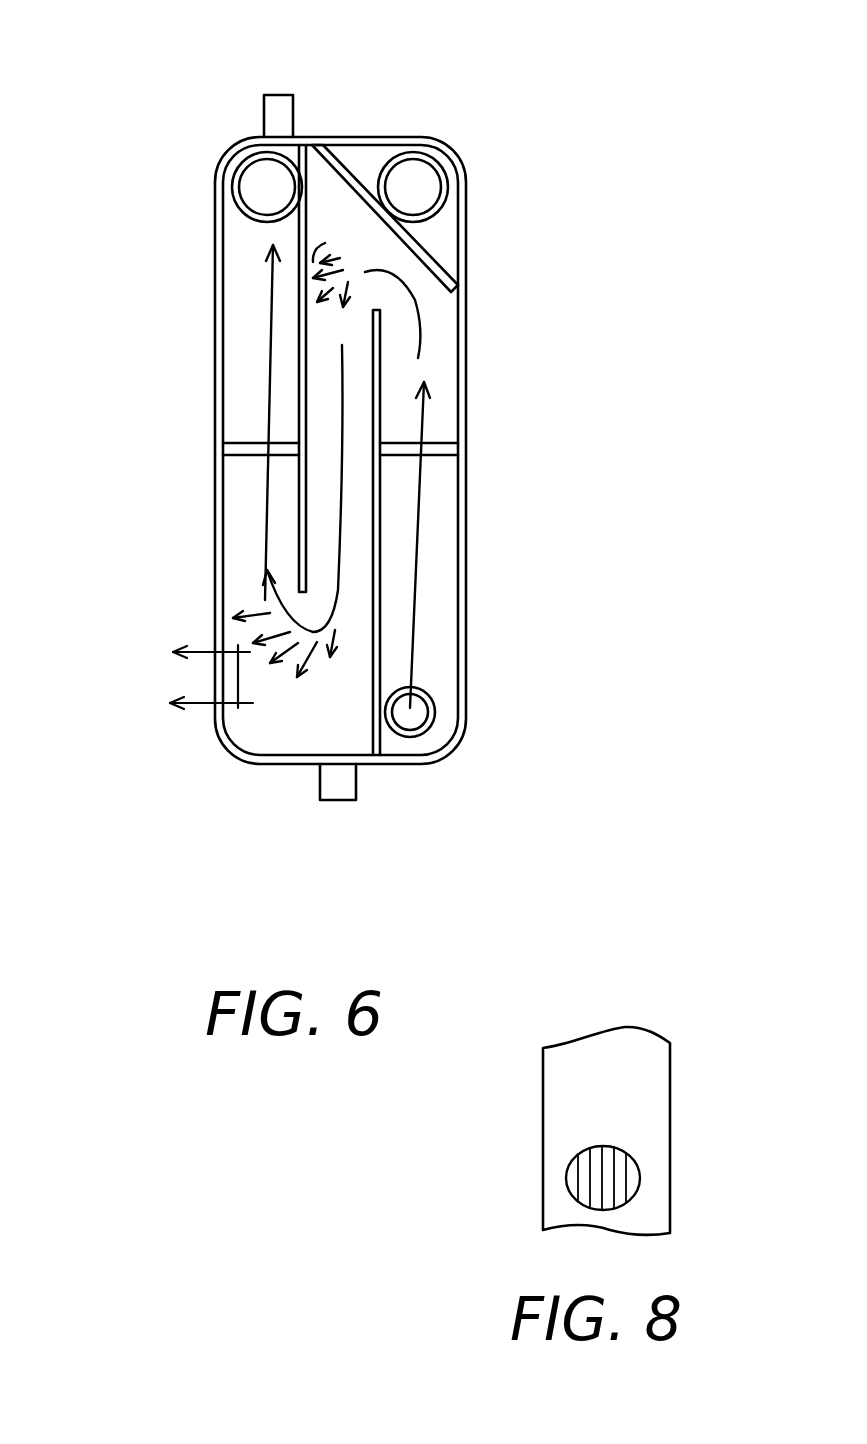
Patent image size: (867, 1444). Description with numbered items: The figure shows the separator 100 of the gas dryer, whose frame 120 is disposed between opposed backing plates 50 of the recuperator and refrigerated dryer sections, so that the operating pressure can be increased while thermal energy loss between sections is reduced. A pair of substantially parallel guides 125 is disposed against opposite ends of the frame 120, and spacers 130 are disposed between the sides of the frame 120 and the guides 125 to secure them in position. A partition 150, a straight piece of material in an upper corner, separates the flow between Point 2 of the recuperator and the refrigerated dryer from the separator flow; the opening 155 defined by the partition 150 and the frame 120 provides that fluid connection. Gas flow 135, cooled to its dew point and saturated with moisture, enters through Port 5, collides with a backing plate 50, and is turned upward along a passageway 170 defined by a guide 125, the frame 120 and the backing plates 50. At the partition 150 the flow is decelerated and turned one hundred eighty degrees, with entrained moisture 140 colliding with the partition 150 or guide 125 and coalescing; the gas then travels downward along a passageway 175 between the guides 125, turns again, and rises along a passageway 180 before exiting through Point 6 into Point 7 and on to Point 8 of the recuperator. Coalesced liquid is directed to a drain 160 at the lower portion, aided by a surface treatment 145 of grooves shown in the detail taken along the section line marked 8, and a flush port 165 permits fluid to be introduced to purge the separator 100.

In FIG. 6, the separator 100 is at (550, 82).
In FIG. 6, the frame 120 is at (467, 281).
In FIG. 8, the frame 120 is at (670, 1093).
In FIG. 6, the guides 125 is at (420, 795).
In FIG. 6, the spacers 130 is at (238, 440).
In FIG. 6, the gas flow 135 is at (275, 305).
In FIG. 6, the entrained moisture 140 is at (348, 278).
In FIG. 8, the surface treatment 145 is at (645, 1172).
In FIG. 6, the partition 150 is at (343, 158).
In FIG. 6, the opening 155 is at (438, 238).
In FIG. 6, the drain 160 is at (318, 790).
In FIG. 6, the flush port 165 is at (278, 95).
In FIG. 6, the passageway 170 is at (440, 490).
In FIG. 6, the passageway 175 is at (360, 400).
In FIG. 6, the passageway 180 is at (237, 488).
In FIG. 6, the backing plates 50 is at (438, 614).
In FIG. 6, the Point 2 is at (463, 167).
In FIG. 6, the Port 5 is at (435, 708).
In FIG. 6, the Point 6 is at (218, 178).
In FIG. 6, the Point 7 is at (253, 157).
In FIG. 6, the Point 8 is at (194, 678).